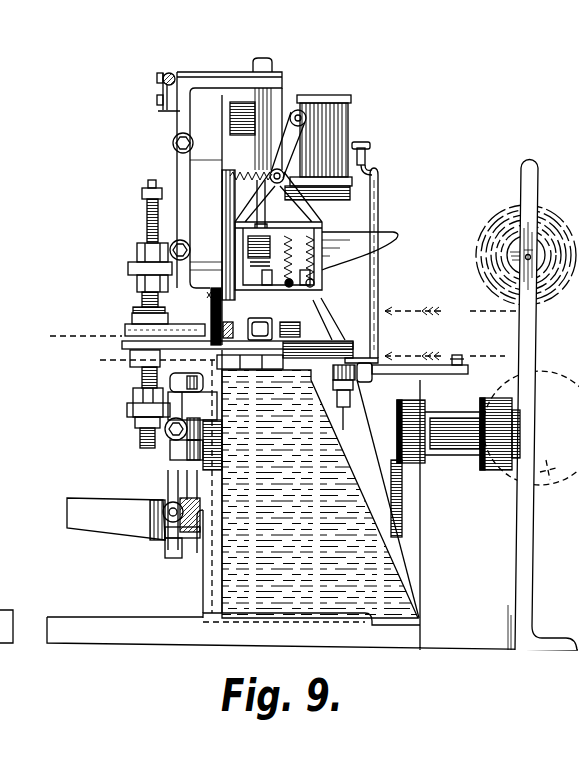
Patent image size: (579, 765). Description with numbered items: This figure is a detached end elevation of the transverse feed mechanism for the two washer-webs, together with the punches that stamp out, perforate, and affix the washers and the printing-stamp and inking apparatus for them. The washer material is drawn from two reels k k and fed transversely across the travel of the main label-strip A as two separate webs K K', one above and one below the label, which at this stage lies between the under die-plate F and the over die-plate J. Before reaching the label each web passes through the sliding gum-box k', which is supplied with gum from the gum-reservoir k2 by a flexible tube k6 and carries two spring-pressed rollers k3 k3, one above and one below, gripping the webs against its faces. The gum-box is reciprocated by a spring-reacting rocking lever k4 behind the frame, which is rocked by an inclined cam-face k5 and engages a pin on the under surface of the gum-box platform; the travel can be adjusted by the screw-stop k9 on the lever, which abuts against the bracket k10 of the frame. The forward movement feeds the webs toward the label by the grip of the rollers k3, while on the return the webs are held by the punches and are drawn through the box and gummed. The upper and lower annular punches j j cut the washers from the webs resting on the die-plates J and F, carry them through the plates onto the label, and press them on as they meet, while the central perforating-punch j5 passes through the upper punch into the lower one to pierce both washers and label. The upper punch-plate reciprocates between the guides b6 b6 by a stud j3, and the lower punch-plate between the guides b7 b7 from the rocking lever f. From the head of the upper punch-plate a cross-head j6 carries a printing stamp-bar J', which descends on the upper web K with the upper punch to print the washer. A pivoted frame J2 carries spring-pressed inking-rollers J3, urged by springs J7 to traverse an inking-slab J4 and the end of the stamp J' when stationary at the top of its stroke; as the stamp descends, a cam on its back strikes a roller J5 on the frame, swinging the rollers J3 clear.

The cross-head j6 is at (213, 73).
The printing stamp-bar J' is at (268, 123).
The guides b6 is at (163, 112).
The gum-reservoir k2 is at (351, 113).
The springs J7 is at (280, 150).
The roller J5 is at (295, 190).
The pivoted frame J2 is at (324, 226).
The inking-slab J4 is at (348, 264).
The spring-pressed inking-rollers J3 is at (313, 285).
The flexible tube k6 is at (379, 200).
The stud j3 is at (142, 190).
The central perforating-punch j5 is at (147, 218).
The punches j is at (133, 311).
The over die-plate J is at (144, 323).
The main label-strip A is at (74, 337).
The under die-plate F is at (125, 345).
The spring-pressed rollers k3 is at (228, 295).
The sliding gum-box k' is at (358, 338).
The screw-stop k9 is at (280, 323).
The bracket k10 is at (372, 355).
The upper washer-web K is at (451, 309).
The lower washer-web K' is at (445, 354).
The reels k is at (527, 358).
The rocking lever k4 is at (435, 375).
The inclined cam-face k5 is at (447, 480).
The rocking lever f is at (162, 478).
The guides b7 is at (170, 550).